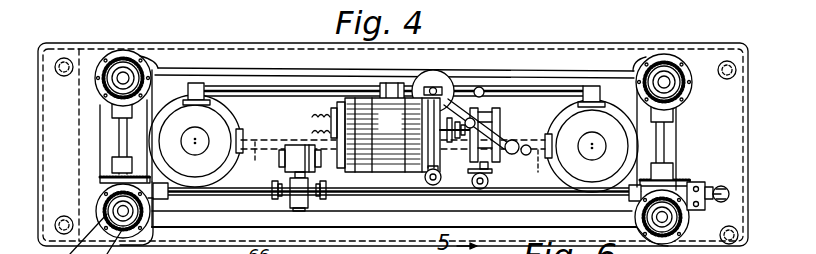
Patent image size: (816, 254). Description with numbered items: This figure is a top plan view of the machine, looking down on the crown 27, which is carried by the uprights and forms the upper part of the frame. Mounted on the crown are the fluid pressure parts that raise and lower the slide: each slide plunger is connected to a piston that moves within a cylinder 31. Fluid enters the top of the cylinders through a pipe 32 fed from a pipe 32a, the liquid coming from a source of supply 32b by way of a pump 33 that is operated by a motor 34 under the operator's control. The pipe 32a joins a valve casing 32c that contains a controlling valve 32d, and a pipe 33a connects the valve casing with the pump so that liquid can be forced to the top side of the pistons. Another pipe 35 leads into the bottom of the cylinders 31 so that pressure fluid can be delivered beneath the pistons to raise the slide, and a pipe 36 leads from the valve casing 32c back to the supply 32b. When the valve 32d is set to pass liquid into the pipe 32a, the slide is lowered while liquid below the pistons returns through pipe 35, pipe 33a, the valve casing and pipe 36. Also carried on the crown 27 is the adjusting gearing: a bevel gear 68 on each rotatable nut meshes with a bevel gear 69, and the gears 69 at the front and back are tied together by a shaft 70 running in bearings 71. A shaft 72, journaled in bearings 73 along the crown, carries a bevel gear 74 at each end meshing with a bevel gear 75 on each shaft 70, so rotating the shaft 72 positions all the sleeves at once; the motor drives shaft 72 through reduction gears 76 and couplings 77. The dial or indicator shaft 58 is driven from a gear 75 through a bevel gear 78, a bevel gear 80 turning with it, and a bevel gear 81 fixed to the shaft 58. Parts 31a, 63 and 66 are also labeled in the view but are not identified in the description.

The crown 27 is at (334, 78).
The cylinder 31 is at (238, 128).
The roller 31a is at (480, 189).
The pipe 32 is at (244, 91).
The pipe 32a is at (390, 85).
The source of supply 32b is at (498, 152).
The valve casing 32c is at (468, 68).
The controlling valve 32d is at (437, 79).
The pump 33 is at (490, 110).
The pipe 33a is at (473, 110).
The motor 34 is at (391, 135).
The pipe 35 is at (394, 168).
The pipe 36 is at (427, 181).
The dial or indicator shaft 58 is at (730, 193).
The base 63 is at (108, 214).
The gear wheel 66 is at (123, 71).
The bevel gear 68 is at (146, 61).
The bevel gear 69 is at (108, 97).
The shaft 70 is at (121, 142).
The bearings 71 is at (118, 112).
The shaft 72 is at (424, 197).
The bearings 73 is at (166, 199).
The bevel gear 74 is at (133, 222).
The bevel gear 75 is at (298, 143).
The reduction gears 76 is at (297, 211).
The couplings 77 is at (275, 202).
The bevel gear 78 is at (706, 208).
The bevel gear 80 is at (710, 190).
The bevel gear 81 is at (715, 199).